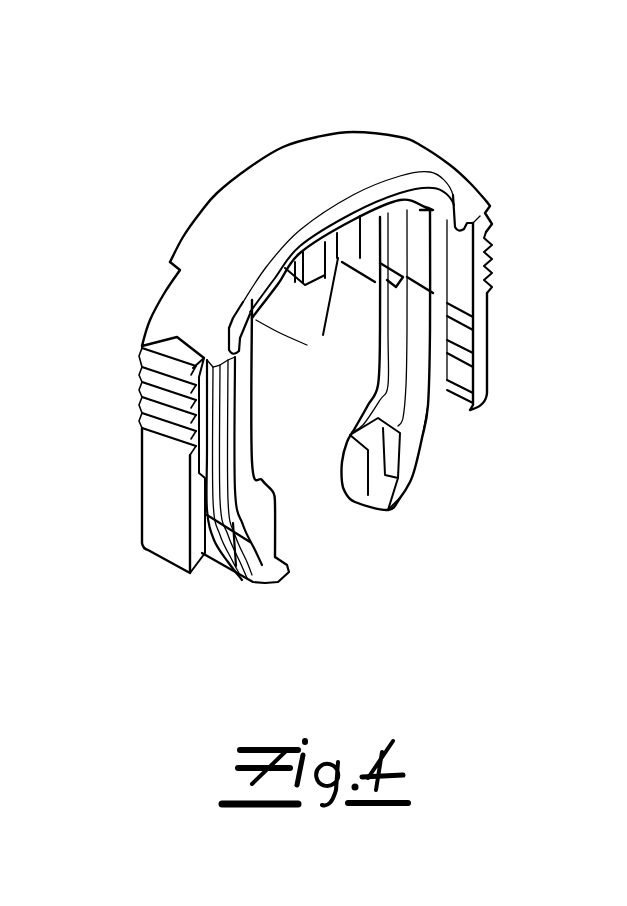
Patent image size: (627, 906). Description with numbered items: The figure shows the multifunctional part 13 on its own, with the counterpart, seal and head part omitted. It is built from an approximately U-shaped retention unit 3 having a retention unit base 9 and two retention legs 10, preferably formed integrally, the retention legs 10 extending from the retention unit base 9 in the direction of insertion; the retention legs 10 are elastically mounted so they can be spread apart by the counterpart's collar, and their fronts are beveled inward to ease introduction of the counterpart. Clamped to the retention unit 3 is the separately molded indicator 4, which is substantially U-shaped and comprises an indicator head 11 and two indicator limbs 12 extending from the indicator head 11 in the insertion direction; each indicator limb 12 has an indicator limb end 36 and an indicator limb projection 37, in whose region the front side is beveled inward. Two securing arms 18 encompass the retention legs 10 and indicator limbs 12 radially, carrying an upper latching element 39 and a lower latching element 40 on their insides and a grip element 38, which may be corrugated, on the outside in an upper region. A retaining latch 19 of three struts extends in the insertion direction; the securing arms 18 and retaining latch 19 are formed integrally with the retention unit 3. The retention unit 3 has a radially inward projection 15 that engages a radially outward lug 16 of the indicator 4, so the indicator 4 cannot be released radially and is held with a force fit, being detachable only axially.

The retention unit 3 is at (311, 209).
The indicator 4 is at (435, 503).
The retention unit base 9 is at (272, 180).
The retention legs 10 is at (218, 572).
The indicator head 11 is at (397, 205).
The indicator limbs 12 is at (252, 592).
The multifunctional part 13 is at (503, 113).
The projection 15 is at (222, 351).
The lug 16 is at (226, 334).
The securing arms 18 is at (330, 385).
The retaining latch 19 is at (310, 274).
The indicator limb end 36 is at (284, 573).
The indicator limb projection 37 is at (256, 505).
The grip element 38 is at (155, 404).
The upper latching element 39 is at (464, 352).
The lower latching element 40 is at (487, 393).